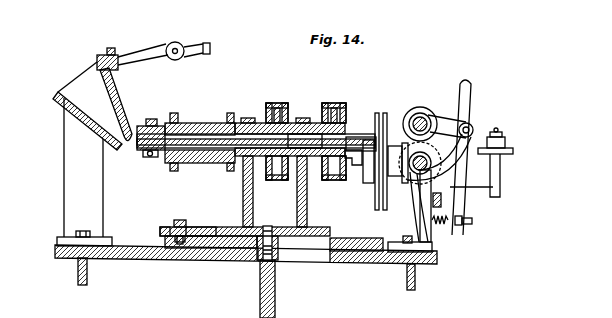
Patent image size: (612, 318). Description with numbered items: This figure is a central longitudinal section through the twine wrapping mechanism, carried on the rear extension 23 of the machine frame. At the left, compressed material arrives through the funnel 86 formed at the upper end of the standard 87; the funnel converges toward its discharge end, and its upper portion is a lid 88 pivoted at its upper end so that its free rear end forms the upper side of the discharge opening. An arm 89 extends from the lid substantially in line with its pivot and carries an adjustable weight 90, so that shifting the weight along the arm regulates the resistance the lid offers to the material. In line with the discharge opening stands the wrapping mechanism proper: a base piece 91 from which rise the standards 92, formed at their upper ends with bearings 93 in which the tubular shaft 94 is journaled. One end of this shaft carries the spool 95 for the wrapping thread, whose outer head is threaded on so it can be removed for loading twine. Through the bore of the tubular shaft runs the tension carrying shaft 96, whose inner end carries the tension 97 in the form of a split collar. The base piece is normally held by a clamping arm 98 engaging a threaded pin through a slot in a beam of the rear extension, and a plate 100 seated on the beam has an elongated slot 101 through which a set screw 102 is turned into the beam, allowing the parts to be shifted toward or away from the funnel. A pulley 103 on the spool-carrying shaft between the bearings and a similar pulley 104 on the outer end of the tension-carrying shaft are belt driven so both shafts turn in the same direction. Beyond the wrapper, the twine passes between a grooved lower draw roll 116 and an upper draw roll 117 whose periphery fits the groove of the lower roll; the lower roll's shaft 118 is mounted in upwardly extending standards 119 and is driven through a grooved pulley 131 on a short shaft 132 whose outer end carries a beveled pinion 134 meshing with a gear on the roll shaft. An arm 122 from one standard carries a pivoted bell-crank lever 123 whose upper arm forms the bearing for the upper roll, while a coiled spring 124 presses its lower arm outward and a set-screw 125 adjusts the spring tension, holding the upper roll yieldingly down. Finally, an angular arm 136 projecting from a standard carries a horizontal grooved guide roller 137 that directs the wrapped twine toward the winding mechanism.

The rear extension 23 is at (129, 259).
The funnel 86 is at (60, 95).
The standard 87 is at (64, 178).
The lid 88 is at (117, 104).
The arm 89 is at (136, 56).
The adjustable weight 90 is at (178, 42).
The base piece 91 is at (292, 238).
The standards 92 is at (243, 190).
The bearings 93 is at (246, 117).
The tubular shaft 94 is at (294, 118).
The spool 95 is at (203, 122).
The tension carrying shaft 96 is at (349, 132).
The tension 97 is at (153, 118).
The clamping arm 98 is at (257, 291).
The plate 100 is at (163, 227).
The elongated slot 101 is at (173, 219).
The set screw 102 is at (182, 226).
The pulley 103 is at (273, 102).
The pulley 104 is at (338, 102).
The lower draw roll 116 is at (455, 187).
The upper draw roll 117 is at (421, 107).
The shaft 118 is at (415, 180).
The standards 119 is at (432, 245).
The arm 122 is at (452, 162).
The bell-crank lever 123 is at (471, 122).
The coiled spring 124 is at (442, 220).
The set-screw 125 is at (472, 222).
The grooved pulley 131 is at (378, 112).
The short shaft 132 is at (365, 152).
The beveled pinion 134 is at (386, 130).
The angular arm 136 is at (500, 197).
The guide roller 137 is at (524, 128).